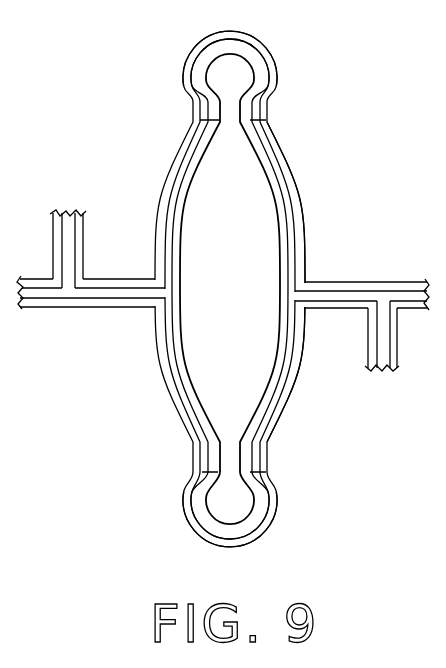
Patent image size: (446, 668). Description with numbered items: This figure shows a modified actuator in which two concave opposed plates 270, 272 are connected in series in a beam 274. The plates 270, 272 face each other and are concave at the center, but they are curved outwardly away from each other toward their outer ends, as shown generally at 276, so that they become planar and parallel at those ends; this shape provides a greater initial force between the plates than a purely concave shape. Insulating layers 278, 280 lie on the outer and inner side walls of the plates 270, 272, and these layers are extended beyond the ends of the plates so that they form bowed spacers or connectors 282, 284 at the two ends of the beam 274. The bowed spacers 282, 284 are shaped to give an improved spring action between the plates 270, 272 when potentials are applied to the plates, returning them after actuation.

The concave opposed plate 270 is at (178, 207).
The concave opposed plate 272 is at (304, 233).
The beam 274 is at (121, 296).
The outwardly curved outer ends of the plates 276 is at (279, 148).
The insulating layer 278 is at (192, 157).
The insulating layer 280 is at (197, 194).
The bowed spacer or connector 282 is at (262, 40).
The bowed spacer or connector 284 is at (185, 535).